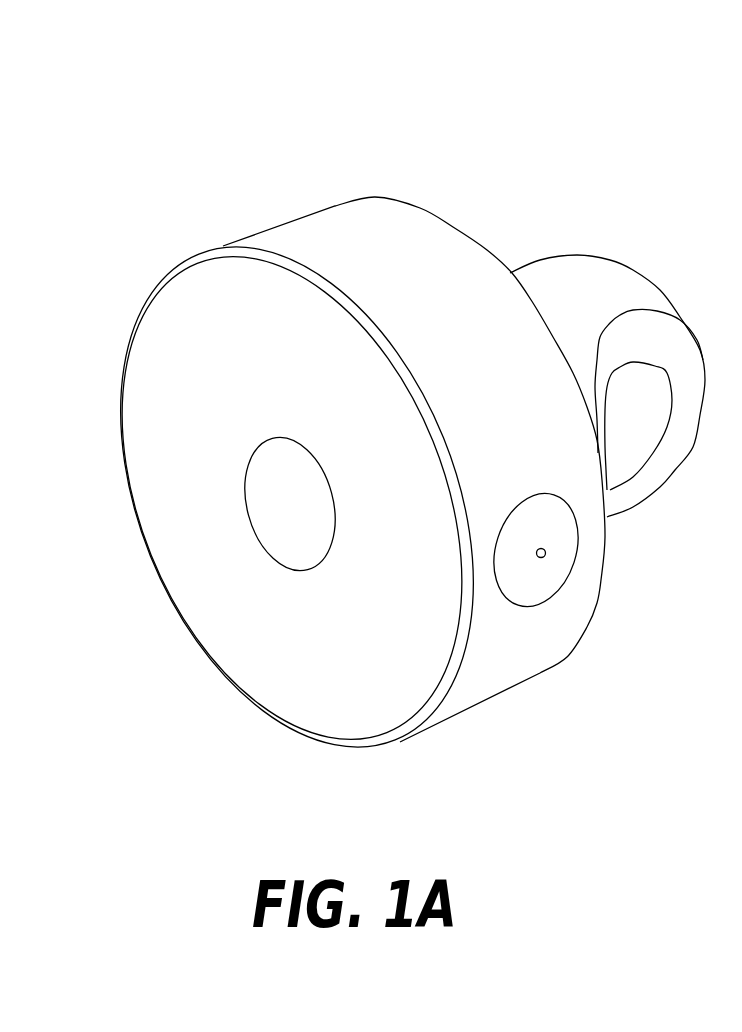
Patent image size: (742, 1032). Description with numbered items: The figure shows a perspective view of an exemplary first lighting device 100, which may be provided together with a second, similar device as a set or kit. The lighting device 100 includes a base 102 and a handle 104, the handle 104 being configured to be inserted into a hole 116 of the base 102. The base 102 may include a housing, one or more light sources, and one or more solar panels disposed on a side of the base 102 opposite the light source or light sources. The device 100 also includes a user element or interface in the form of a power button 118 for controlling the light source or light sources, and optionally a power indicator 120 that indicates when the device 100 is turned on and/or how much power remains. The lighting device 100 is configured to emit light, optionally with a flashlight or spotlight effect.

The first lighting device 100 is at (198, 45).
The base 102 is at (260, 168).
The handle 104 is at (603, 198).
The hole 116 is at (291, 533).
The power button 118 is at (545, 573).
The power indicator 120 is at (546, 553).